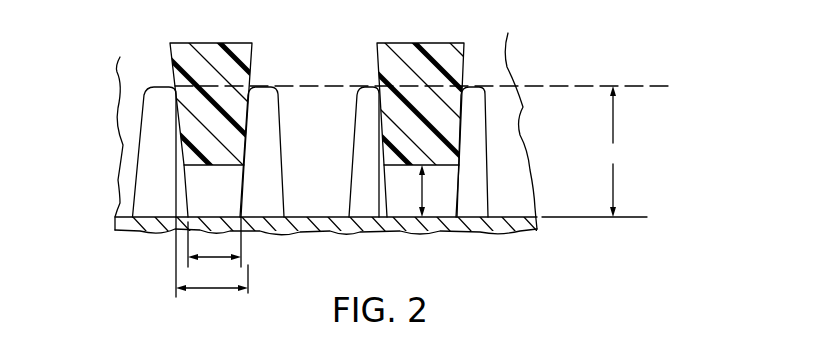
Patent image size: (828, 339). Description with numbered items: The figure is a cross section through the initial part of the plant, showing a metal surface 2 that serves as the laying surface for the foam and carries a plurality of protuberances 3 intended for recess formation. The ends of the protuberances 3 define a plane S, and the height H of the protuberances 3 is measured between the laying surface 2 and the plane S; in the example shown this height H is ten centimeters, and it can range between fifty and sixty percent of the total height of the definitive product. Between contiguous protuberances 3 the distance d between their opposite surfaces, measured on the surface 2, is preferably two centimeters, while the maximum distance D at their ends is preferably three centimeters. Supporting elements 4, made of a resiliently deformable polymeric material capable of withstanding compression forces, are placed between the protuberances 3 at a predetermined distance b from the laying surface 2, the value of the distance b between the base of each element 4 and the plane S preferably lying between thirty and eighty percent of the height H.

The metal surface 2 is at (310, 228).
The protuberances 3 is at (153, 205).
The supporting elements 4 is at (240, 38).
The plane S is at (489, 77).
The height of the protuberances H is at (594, 151).
The distance b is at (428, 191).
The distance between opposite surfaces of two contiguous protuberances d is at (214, 242).
The maximum distance at the ends of two contiguous protuberances D is at (212, 257).